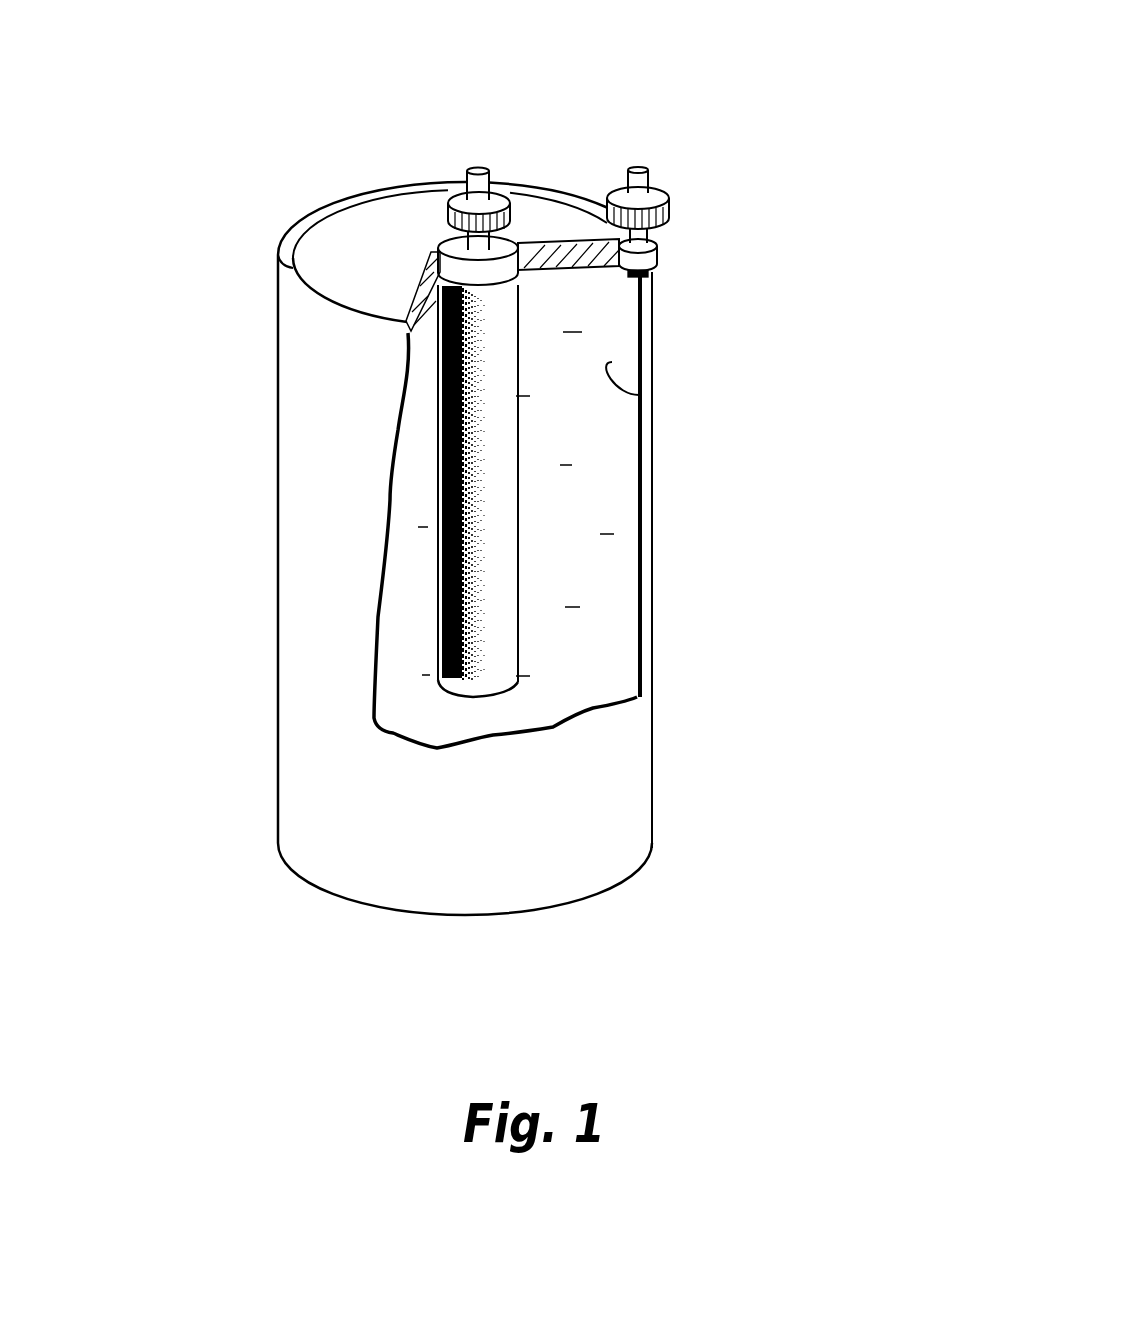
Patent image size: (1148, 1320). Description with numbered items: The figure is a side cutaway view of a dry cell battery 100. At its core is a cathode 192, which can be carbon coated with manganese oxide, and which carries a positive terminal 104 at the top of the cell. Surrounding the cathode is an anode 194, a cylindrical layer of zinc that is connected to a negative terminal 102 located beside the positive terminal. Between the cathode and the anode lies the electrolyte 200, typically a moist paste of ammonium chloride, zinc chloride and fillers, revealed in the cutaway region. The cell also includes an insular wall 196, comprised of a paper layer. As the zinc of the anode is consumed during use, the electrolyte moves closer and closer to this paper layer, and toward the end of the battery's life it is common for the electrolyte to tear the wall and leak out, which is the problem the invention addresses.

The battery 100 is at (500, 811).
The negative terminal 102 is at (643, 165).
The positive terminal 104 is at (480, 165).
The cathode 192 is at (440, 546).
The anode 194 is at (612, 362).
The insular wall 196 is at (652, 489).
The electrolyte 200 is at (593, 597).